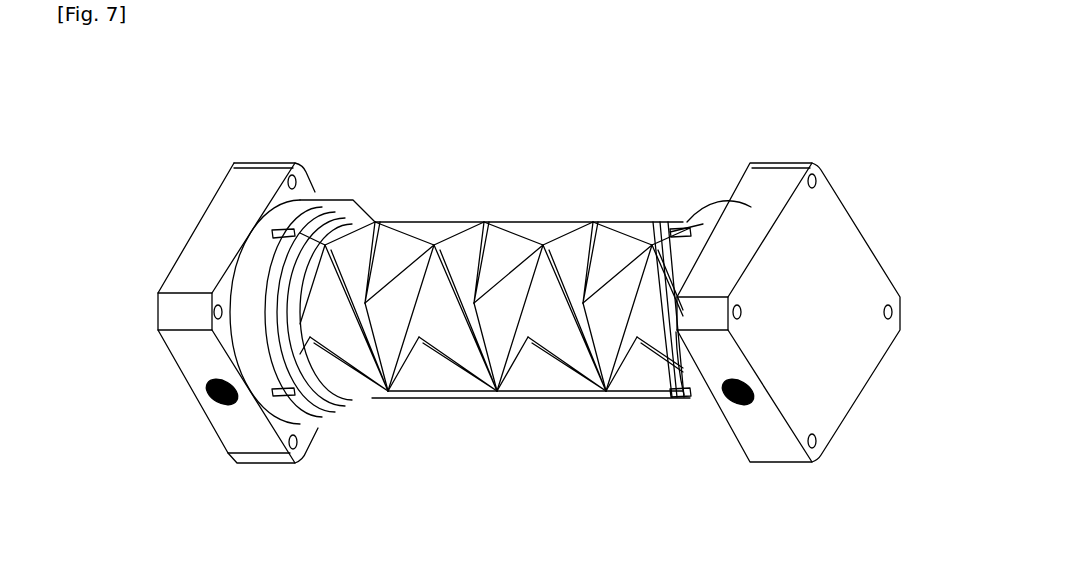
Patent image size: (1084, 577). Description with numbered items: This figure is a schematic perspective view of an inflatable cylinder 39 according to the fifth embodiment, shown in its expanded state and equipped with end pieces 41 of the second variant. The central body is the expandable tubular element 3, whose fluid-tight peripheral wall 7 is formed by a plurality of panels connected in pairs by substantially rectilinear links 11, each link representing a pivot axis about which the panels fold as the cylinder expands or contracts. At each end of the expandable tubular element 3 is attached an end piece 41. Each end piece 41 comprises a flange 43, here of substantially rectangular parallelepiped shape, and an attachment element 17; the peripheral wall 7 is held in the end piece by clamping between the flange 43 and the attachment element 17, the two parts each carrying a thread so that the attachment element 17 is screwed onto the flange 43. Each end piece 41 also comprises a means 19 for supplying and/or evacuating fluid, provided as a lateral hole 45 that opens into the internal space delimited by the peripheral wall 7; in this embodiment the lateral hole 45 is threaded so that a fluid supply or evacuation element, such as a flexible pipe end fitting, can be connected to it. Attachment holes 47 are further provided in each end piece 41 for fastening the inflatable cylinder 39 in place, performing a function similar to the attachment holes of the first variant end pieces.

The expandable tubular element 3 is at (484, 402).
The peripheral wall 7 is at (517, 240).
The rectilinear links 11 is at (610, 227).
The attachment element 17 is at (278, 415).
The means for supplying and/or evacuating fluid 19 is at (205, 393).
The inflatable cylinder 39 is at (498, 124).
The end piece 41 is at (239, 183).
The flange 43 is at (248, 433).
The lateral hole 45 is at (480, 392).
The attachment holes 47 is at (820, 180).